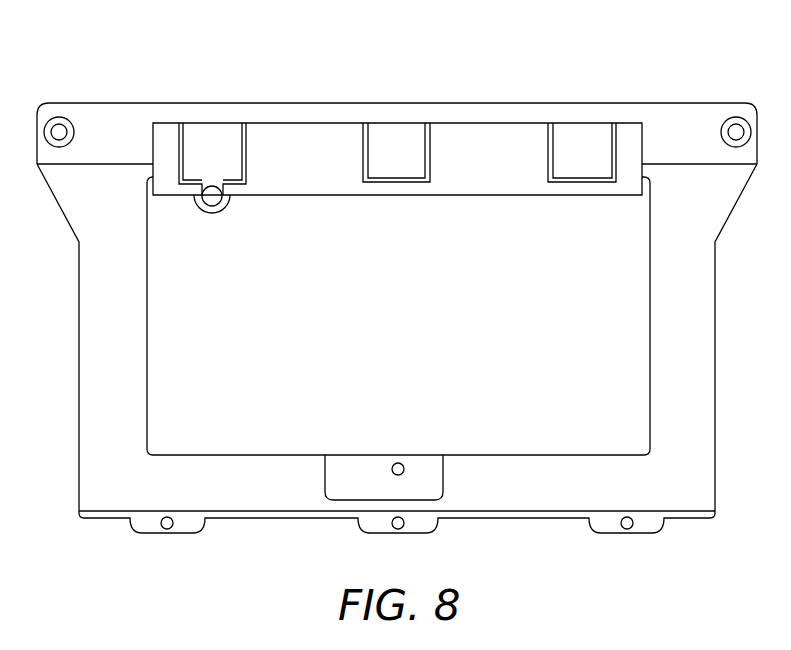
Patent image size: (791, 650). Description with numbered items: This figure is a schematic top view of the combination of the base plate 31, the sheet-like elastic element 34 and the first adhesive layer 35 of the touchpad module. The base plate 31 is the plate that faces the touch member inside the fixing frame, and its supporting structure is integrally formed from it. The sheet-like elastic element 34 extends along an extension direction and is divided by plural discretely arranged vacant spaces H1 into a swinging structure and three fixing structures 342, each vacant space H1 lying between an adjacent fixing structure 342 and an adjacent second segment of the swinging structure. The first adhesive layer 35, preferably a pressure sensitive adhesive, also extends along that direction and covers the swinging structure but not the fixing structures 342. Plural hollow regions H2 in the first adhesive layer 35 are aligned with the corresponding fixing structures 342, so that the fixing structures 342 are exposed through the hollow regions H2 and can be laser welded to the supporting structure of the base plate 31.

The base plate 31 is at (707, 120).
The sheet-like elastic element 34 is at (394, 111).
The fixing structure 342 is at (207, 145).
The first adhesive layer 35 is at (598, 187).
The vacant space H1 is at (176, 143).
The hollow region H2 is at (177, 171).